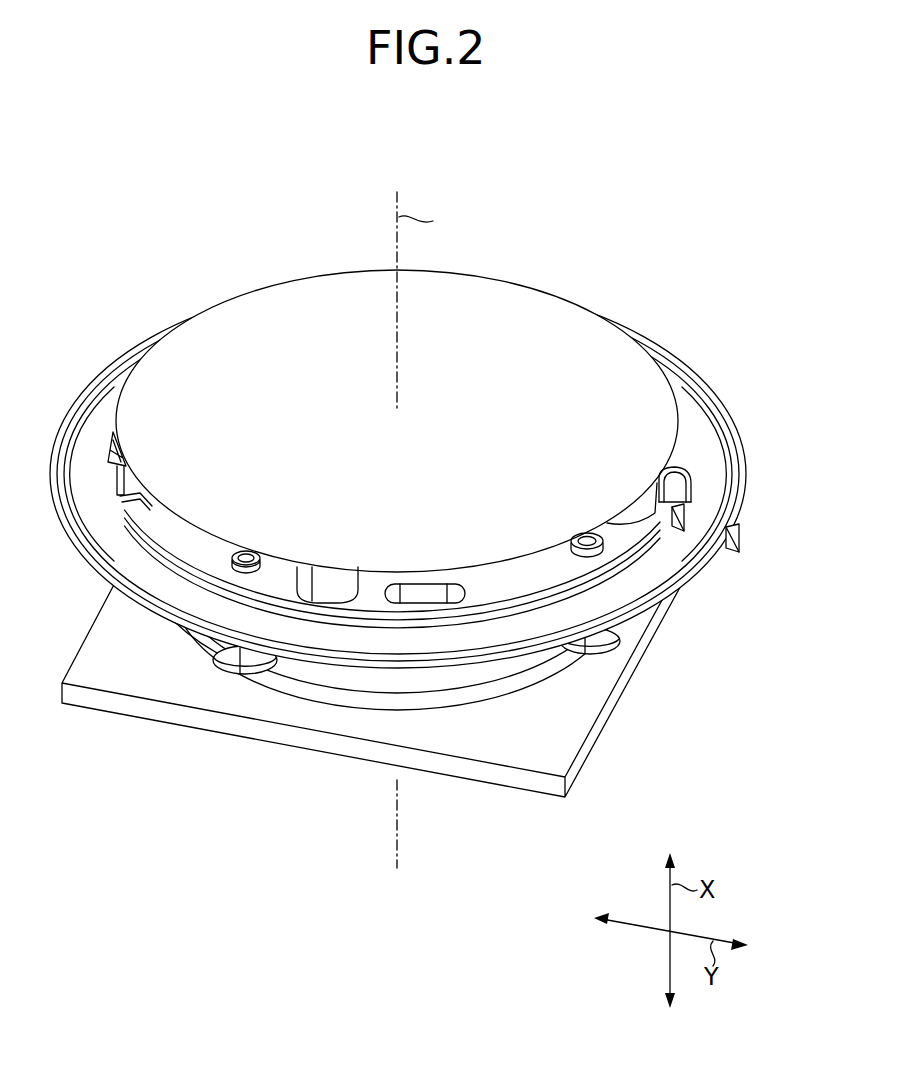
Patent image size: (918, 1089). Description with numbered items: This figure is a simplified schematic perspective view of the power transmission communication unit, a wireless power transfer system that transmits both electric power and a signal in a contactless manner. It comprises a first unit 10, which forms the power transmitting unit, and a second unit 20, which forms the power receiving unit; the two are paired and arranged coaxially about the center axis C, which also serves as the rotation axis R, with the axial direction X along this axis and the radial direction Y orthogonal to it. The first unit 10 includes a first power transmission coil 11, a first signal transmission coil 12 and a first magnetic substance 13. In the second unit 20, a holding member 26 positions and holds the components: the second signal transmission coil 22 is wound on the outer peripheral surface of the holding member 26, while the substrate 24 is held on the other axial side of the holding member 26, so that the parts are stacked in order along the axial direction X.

The first unit 10 is at (439, 505).
The first power transmission coil 11 is at (336, 710).
The first signal transmission coil 12 is at (147, 620).
The first magnetic substance 13 is at (448, 780).
The second unit 20 is at (468, 483).
The second signal transmission coil 22 is at (694, 478).
The substrate 24 is at (505, 306).
The holding member 26 is at (177, 532).